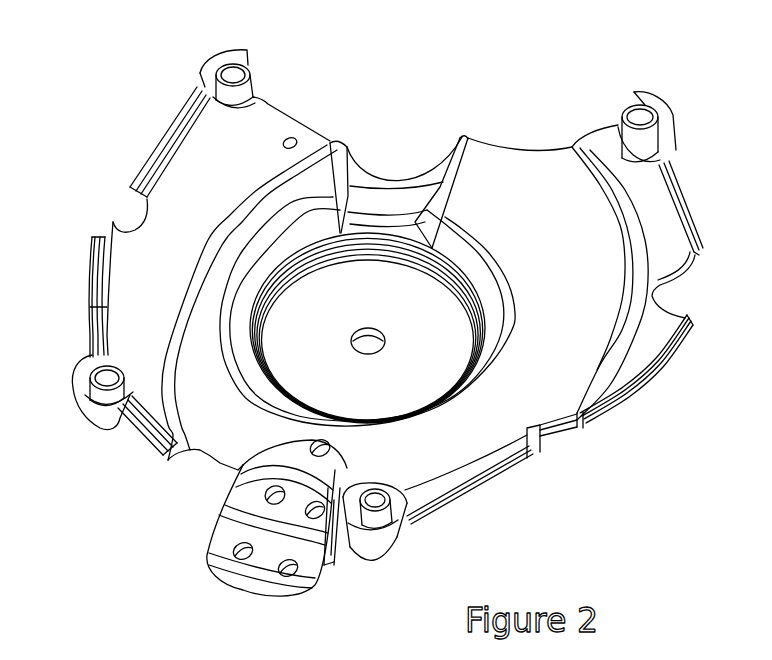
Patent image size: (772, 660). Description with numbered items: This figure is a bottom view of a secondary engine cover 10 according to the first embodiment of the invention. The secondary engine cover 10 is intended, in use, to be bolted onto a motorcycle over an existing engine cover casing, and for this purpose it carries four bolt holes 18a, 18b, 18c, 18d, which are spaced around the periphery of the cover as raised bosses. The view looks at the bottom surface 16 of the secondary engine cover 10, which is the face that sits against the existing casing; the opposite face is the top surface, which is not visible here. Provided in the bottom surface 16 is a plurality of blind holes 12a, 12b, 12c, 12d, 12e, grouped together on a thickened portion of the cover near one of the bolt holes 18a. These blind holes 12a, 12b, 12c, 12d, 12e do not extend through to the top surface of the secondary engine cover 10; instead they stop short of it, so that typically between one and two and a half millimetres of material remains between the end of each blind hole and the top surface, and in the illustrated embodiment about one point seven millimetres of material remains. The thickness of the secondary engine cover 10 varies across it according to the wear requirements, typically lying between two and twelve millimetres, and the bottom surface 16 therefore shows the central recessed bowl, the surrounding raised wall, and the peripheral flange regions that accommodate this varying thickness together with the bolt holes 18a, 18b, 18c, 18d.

The secondary engine cover 10 is at (593, 485).
The blind hole 12a is at (243, 556).
The blind hole 12b is at (288, 572).
The blind hole 12c is at (272, 497).
The blind hole 12d is at (318, 517).
The blind hole 12e is at (320, 448).
The bottom surface 16 is at (570, 363).
The bolt hole 18a is at (377, 503).
The bolt hole 18b is at (110, 377).
The bolt hole 18c is at (237, 73).
The bolt hole 18d is at (640, 117).